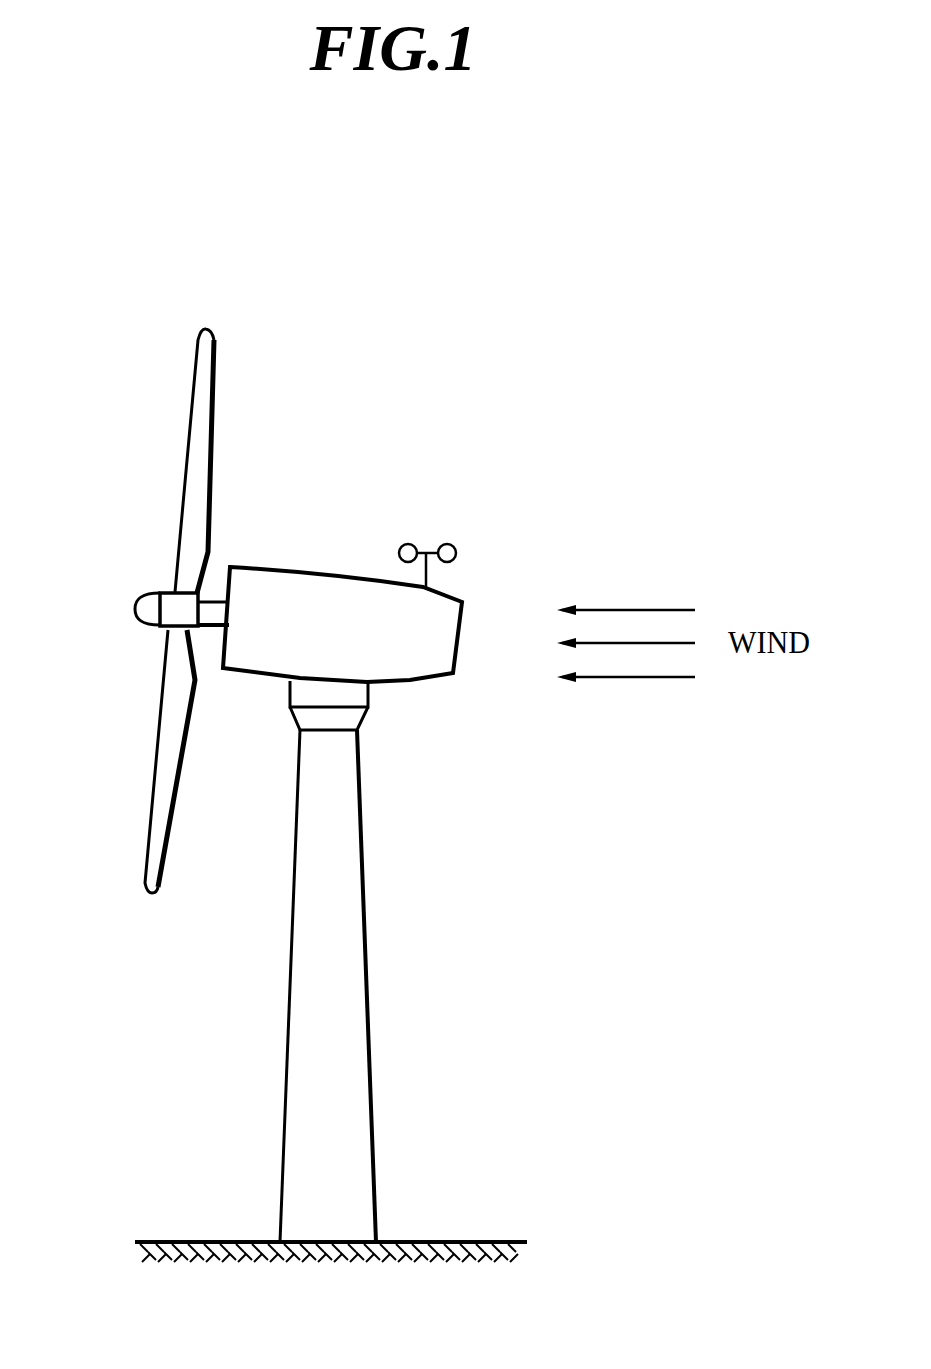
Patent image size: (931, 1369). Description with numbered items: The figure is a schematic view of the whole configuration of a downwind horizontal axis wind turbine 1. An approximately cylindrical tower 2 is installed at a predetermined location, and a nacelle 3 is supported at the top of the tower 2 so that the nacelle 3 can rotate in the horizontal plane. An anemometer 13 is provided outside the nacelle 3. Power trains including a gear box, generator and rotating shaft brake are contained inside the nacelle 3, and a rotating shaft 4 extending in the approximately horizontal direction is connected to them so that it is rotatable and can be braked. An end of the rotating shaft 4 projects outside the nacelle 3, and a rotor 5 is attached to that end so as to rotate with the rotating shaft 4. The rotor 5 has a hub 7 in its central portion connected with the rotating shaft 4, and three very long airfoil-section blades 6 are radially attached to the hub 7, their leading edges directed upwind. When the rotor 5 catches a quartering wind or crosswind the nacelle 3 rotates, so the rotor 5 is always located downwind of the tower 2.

The horizontal axis wind turbine 1 is at (442, 370).
The tower 2 is at (362, 1087).
The nacelle 3 is at (420, 667).
The rotating shaft 4 is at (211, 608).
The rotor 5 is at (102, 986).
The blades 6 is at (167, 753).
The hub 7 is at (165, 617).
The anemometer 13 is at (455, 520).